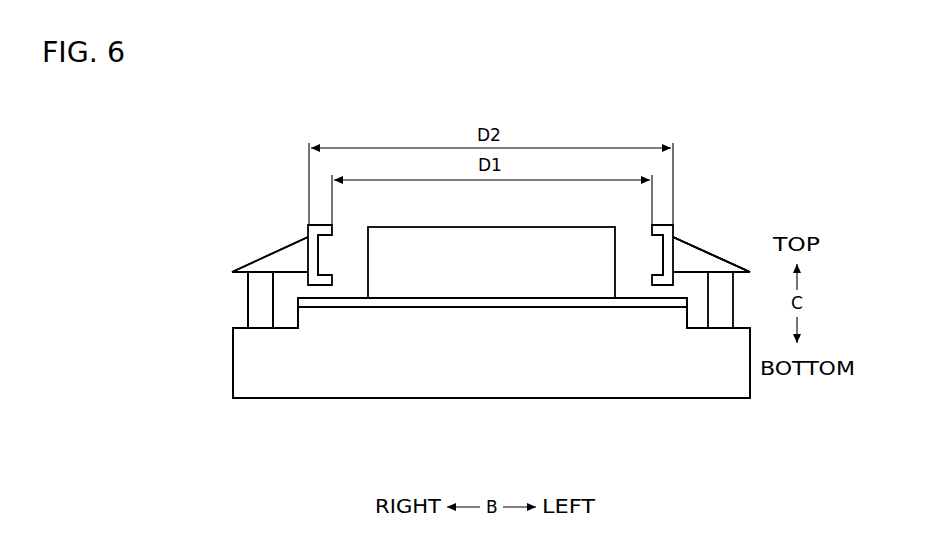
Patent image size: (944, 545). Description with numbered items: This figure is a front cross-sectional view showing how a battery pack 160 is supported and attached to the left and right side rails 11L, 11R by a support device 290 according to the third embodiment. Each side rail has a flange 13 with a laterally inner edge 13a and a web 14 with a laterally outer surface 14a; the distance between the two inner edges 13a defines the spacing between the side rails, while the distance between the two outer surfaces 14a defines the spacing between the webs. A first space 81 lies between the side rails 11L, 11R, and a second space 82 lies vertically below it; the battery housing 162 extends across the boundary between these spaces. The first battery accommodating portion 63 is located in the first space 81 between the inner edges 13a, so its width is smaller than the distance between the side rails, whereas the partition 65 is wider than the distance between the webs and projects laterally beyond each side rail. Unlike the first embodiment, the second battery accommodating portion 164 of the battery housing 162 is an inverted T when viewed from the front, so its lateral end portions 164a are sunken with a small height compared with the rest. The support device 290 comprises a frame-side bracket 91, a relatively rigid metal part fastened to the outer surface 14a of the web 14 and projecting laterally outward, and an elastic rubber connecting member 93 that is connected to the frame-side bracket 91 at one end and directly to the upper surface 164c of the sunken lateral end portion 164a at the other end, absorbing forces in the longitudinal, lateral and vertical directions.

The support device 290 is at (237, 215).
The right side rail 11R is at (303, 223).
The left side rail 11L is at (679, 222).
The flange 13 is at (327, 277).
The inner edge of flange 13a is at (333, 230).
The web 14 is at (675, 230).
The outer surface of web 14a is at (678, 260).
The frame-side bracket 91 is at (268, 256).
The connecting member 93 is at (258, 297).
The battery pack 160 is at (263, 470).
The battery housing 162 is at (426, 450).
The second battery accommodating portion 164 is at (373, 370).
The lateral end portion 164a is at (258, 370).
The upper surface of lateral end portion 164c is at (232, 326).
The partition 65 is at (345, 310).
The first battery accommodating portion 63 is at (413, 283).
The first space 81 is at (625, 292).
The second space 82 is at (696, 404).